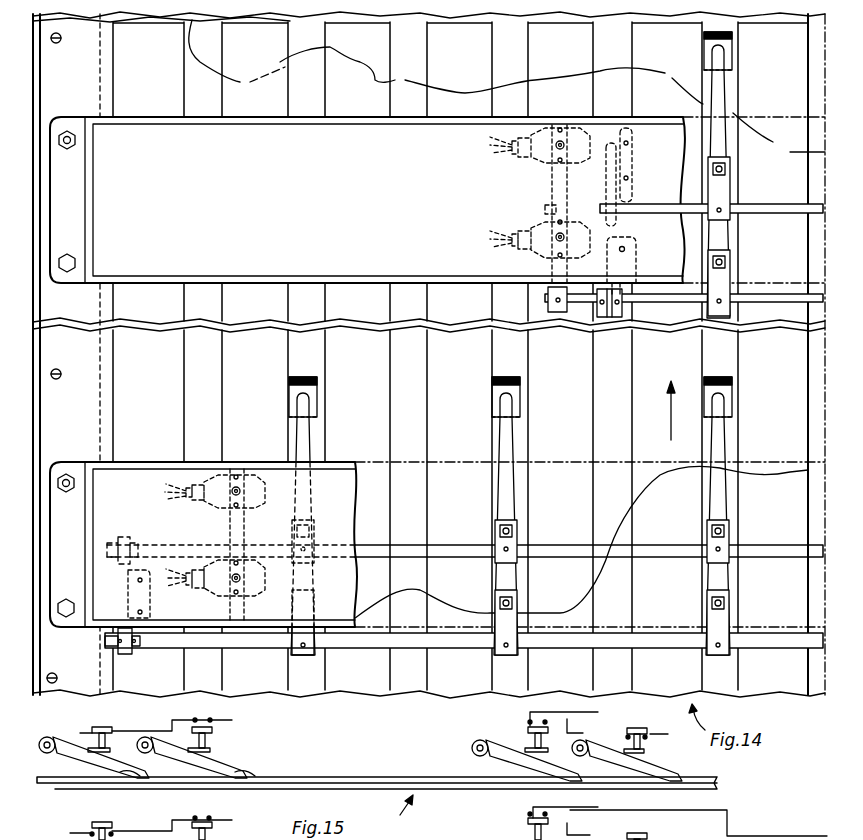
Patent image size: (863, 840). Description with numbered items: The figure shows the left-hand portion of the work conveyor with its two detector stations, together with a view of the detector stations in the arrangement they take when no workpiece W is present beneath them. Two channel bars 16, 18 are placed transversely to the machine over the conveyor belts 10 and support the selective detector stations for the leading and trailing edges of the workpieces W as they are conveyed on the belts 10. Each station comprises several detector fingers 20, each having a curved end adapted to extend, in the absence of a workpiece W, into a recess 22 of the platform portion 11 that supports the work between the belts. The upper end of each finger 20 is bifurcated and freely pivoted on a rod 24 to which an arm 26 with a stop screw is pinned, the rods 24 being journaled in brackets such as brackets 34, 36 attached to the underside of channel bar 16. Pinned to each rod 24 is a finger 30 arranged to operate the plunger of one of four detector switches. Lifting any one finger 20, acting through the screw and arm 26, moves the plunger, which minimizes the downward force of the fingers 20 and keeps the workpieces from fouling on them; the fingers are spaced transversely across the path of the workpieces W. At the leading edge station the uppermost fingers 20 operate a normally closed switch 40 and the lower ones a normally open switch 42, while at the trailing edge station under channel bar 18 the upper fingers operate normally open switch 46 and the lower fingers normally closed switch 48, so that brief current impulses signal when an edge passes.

In FIG. 14, the conveyor belt 10 is at (643, 48).
In FIG. 15, the conveyor belt 10 is at (333, 778).
In FIG. 14, the platform portion 11 is at (503, 60).
In FIG. 15, the platform portion 11 is at (207, 787).
In FIG. 14, the channel bar 16 is at (252, 133).
In FIG. 14, the channel bar 18 is at (128, 480).
In FIG. 14, the detector finger 20 is at (725, 94).
In FIG. 15, the detector finger 20 is at (192, 762).
In FIG. 14, the recess 22 is at (725, 42).
In FIG. 14, the rod 24 is at (766, 295).
In FIG. 14, the arm 26 is at (735, 222).
In FIG. 15, the finger 30 is at (360, 759).
In FIG. 14, the bracket 34 is at (633, 246).
In FIG. 14, the bracket 36 is at (637, 158).
In FIG. 14, the normally closed switch 40 is at (540, 156).
In FIG. 15, the normally closed switch 40 is at (640, 726).
In FIG. 14, the normally open switch 42 is at (537, 235).
In FIG. 15, the normally open switch 42 is at (527, 738).
In FIG. 14, the normally open switch 46 is at (263, 470).
In FIG. 15, the normally open switch 46 is at (214, 743).
In FIG. 14, the normally closed switch 48 is at (205, 588).
In FIG. 15, the normally closed switch 48 is at (108, 724).
In FIG. 14, the workpiece W is at (375, 72).